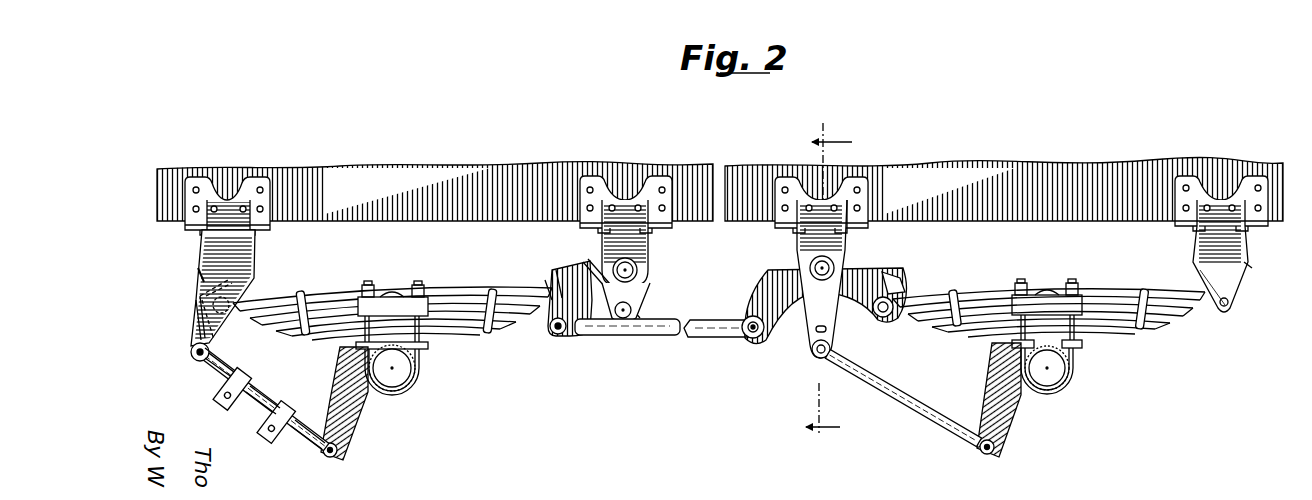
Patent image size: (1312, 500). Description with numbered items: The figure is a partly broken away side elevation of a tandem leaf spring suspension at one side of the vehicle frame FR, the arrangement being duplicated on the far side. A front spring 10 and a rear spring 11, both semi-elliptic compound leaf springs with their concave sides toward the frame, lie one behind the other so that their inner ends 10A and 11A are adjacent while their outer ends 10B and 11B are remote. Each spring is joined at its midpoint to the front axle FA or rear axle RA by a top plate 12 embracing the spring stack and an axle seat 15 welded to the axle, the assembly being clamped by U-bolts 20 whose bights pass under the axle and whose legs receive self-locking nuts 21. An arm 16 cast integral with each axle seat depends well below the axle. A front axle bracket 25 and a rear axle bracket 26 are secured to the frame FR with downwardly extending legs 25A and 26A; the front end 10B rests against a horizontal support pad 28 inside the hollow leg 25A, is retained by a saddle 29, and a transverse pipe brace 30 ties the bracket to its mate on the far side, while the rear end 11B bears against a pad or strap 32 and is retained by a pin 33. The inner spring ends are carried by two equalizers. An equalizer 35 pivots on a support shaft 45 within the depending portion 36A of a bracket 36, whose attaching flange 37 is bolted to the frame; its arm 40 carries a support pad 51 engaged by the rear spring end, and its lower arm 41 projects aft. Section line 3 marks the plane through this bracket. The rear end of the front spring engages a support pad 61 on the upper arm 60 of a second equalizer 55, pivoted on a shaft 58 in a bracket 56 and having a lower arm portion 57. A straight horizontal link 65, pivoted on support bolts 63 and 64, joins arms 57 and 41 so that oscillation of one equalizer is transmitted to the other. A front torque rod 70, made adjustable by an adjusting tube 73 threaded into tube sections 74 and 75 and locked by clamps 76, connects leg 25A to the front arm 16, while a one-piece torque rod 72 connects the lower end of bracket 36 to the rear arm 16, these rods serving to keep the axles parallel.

The frame FR is at (475, 180).
The front axle FA is at (390, 388).
The rear axle RA is at (1057, 392).
The section line 3- 3 is at (829, 286).
The front spring 10 is at (332, 297).
The rear end of front spring 10A is at (550, 285).
The front end of front spring 10B is at (195, 268).
The rear spring 11 is at (1110, 290).
The front end of rear spring 11A is at (903, 285).
The rear end of rear spring 11B is at (1250, 266).
The top plate 12 is at (400, 294).
The axle seat 15 is at (413, 362).
The arm 16 is at (365, 420).
The U-bolts 20 is at (422, 381).
The self-locking nuts 21 is at (372, 292).
The front axle bracket 25 is at (204, 192).
The leg of front bracket 25A is at (195, 318).
The rear axle bracket 26 is at (1243, 178).
The leg of rear bracket 26A is at (1242, 298).
The support pad 28 is at (243, 259).
The saddle 29 is at (192, 300).
The pipe brace 30 is at (235, 330).
The pad or strap 32 is at (1197, 253).
The pin 33 is at (1218, 318).
The equalizer 35 is at (775, 276).
The bracket 36 is at (803, 168).
The depending portion of bracket 36A is at (838, 318).
The attaching flange 37 is at (866, 200).
The equalizer arm 40 is at (903, 298).
The lower equalizer arm 41 is at (762, 306).
The support shaft 45 is at (838, 263).
The support pad 51 is at (890, 267).
The equalizer 55 is at (541, 318).
The bracket 56 is at (607, 187).
The lower arm portion 57 is at (585, 336).
The support shaft 58 is at (640, 266).
The upper arm portion 60 is at (583, 267).
The support pad 61 is at (549, 262).
The support bolt 63 is at (557, 335).
The support bolt 64 is at (762, 343).
The link 65 is at (705, 330).
The front torque rod 70 is at (306, 449).
The torque rod 72 is at (943, 431).
The adjusting tube 73 is at (266, 400).
The tube section 74 is at (232, 378).
The tube section 75 is at (303, 422).
The clamps 76 is at (228, 389).